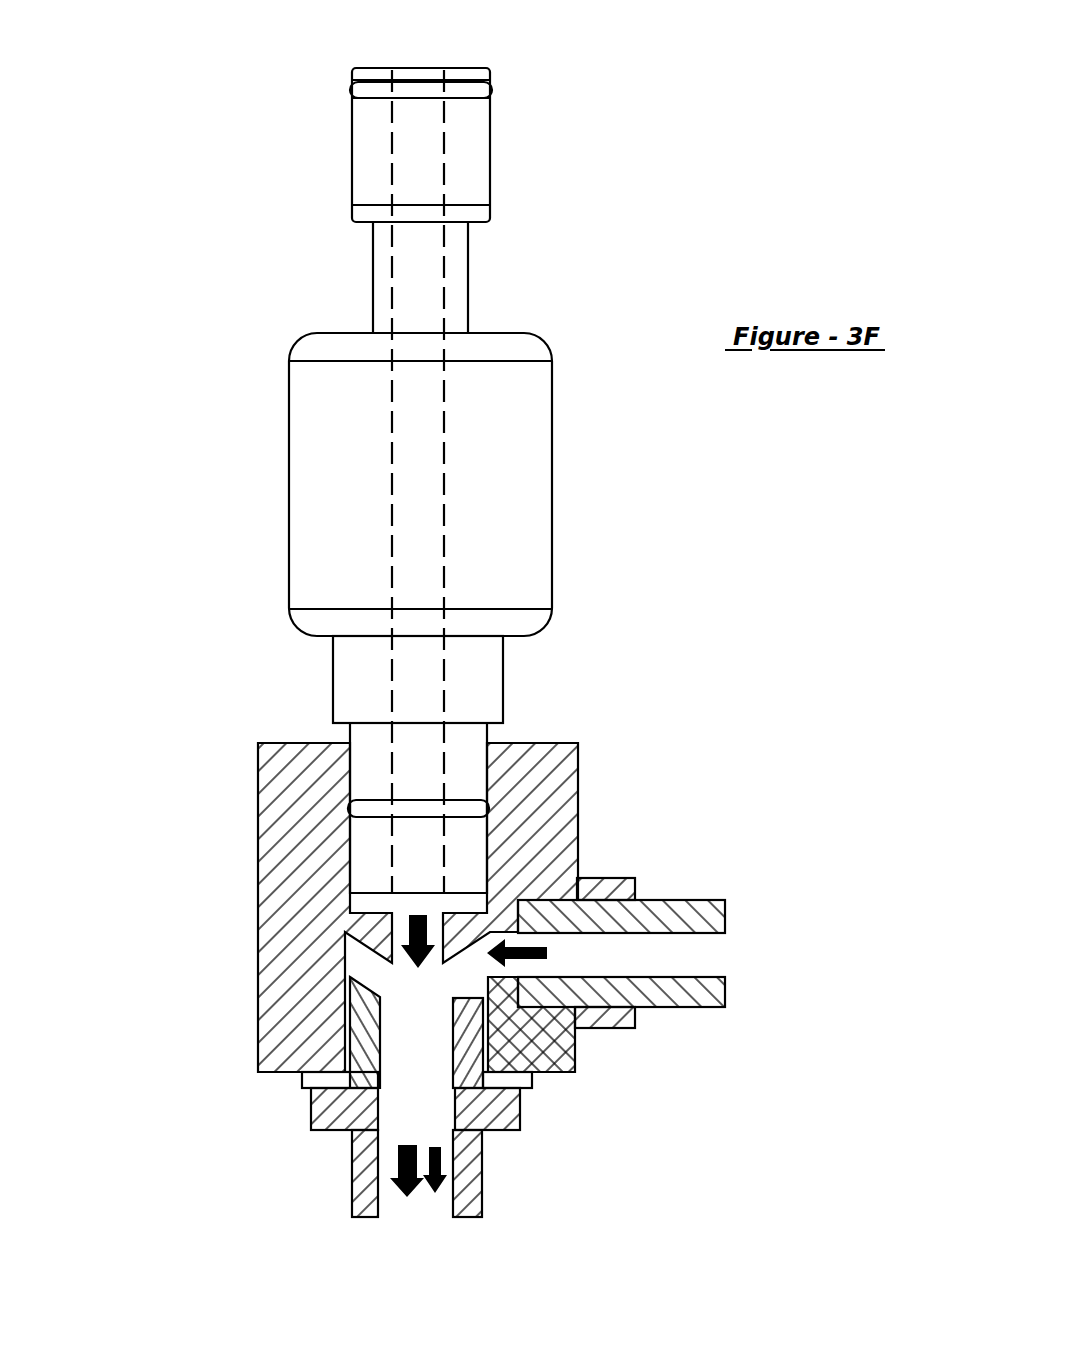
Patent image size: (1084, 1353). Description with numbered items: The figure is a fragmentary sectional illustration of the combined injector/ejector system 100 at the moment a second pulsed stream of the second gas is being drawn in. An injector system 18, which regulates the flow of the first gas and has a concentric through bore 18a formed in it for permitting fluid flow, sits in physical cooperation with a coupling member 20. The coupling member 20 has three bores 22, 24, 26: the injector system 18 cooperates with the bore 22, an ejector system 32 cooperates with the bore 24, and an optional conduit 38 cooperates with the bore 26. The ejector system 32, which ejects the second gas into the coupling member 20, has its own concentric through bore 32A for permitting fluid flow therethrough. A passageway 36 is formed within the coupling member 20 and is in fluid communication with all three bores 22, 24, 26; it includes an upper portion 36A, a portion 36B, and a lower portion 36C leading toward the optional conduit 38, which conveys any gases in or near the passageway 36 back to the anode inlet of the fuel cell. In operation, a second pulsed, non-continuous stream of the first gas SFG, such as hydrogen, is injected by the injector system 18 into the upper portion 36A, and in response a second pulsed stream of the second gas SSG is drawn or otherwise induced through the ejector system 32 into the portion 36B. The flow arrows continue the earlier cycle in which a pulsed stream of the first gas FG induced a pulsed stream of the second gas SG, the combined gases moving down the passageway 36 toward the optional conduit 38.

The combined injector/ejector system 100 is at (190, 628).
The coupling member 20 is at (213, 802).
The injector system 18 is at (554, 427).
The concentric through bore 18a is at (445, 137).
The bore 22 is at (346, 745).
The ejector system 32 is at (686, 886).
The concentric through bore 32A is at (716, 950).
The bore 24 is at (553, 1007).
The bore 26 is at (348, 1021).
The optional conduit 38 is at (352, 1165).
The passageway 36 is at (428, 1205).
The upper portion of the passageway 36A is at (378, 978).
The upper portion of the passageway 36B is at (475, 986).
The third outlet section 36C is at (435, 1036).
The second pulsed stream of the first gas SFG is at (409, 930).
The second pulsed stream of the second gas SSG is at (523, 952).
The pulsed stream of the first gas FG is at (395, 1160).
The pulsed stream of the second gas SG is at (443, 1167).